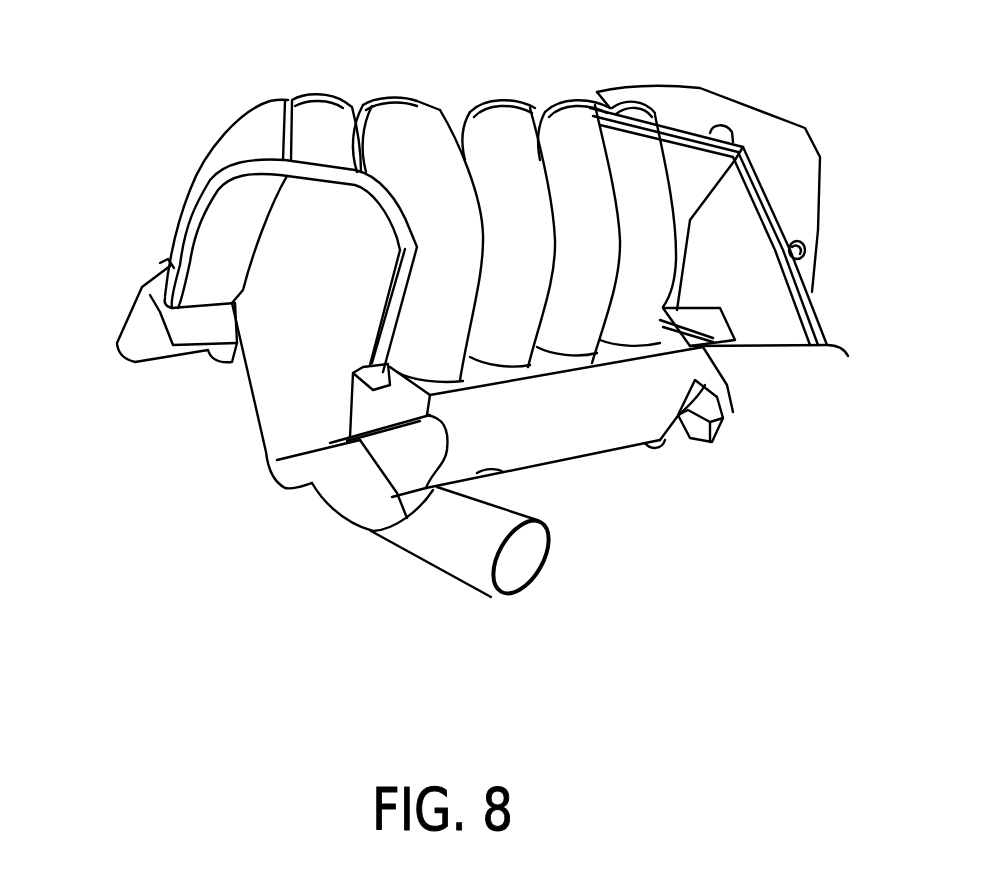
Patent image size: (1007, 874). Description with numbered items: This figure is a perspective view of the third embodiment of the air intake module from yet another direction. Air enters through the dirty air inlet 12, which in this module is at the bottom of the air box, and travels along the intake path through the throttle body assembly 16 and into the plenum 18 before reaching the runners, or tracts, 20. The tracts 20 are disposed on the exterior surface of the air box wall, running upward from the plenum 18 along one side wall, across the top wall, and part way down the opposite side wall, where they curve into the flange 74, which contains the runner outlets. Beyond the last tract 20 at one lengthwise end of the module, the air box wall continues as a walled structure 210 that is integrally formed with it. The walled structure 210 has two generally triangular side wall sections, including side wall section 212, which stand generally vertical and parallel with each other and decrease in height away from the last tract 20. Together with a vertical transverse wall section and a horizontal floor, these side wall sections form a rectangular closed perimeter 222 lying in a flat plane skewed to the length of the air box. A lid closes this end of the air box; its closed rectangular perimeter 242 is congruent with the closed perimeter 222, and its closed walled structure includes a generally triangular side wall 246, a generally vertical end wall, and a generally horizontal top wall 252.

The dirty air inlet 12 is at (507, 598).
The throttle body assembly 16 is at (699, 443).
The plenum 18 is at (539, 431).
The runners 20 is at (385, 100).
The flange 74 is at (120, 352).
The walled structure 210 is at (795, 350).
The side wall section 212 is at (763, 325).
The closed perimeter 222 is at (828, 345).
The closed rectangular perimeter 242 is at (661, 120).
The triangular side wall 246 is at (783, 170).
The top wall 252 is at (695, 105).